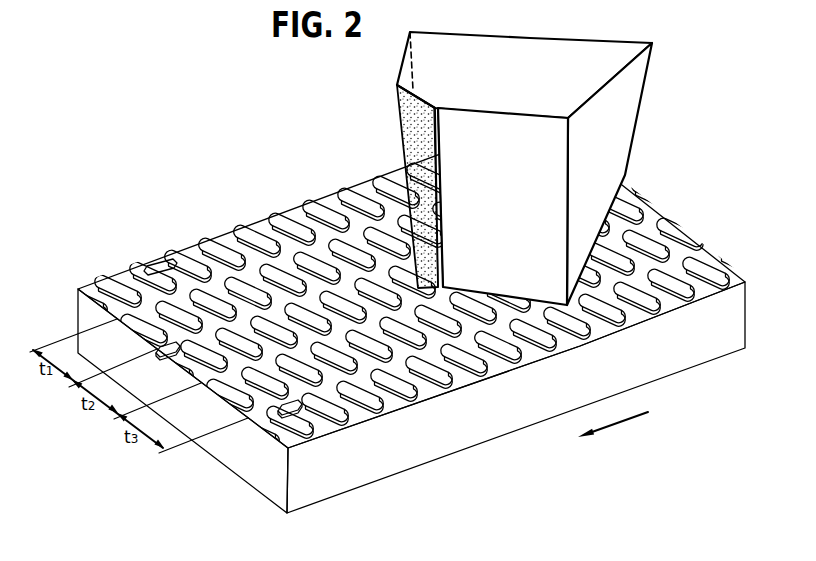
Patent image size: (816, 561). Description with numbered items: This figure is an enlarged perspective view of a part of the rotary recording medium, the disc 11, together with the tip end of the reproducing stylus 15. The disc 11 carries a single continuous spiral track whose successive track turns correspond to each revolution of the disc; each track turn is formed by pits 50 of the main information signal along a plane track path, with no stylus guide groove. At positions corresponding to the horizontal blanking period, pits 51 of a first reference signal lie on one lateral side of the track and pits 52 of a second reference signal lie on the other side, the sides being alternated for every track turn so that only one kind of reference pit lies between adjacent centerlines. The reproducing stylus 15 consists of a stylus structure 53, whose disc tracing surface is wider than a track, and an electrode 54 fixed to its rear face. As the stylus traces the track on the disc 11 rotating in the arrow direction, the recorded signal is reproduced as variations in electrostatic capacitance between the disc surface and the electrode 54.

The disc 11 is at (156, 251).
The reproducing stylus 15 is at (394, 71).
The pits 50 is at (245, 237).
The pits 51 is at (303, 243).
The pits 52 is at (167, 352).
The stylus structure 53 is at (628, 129).
The electrode 54 is at (403, 128).